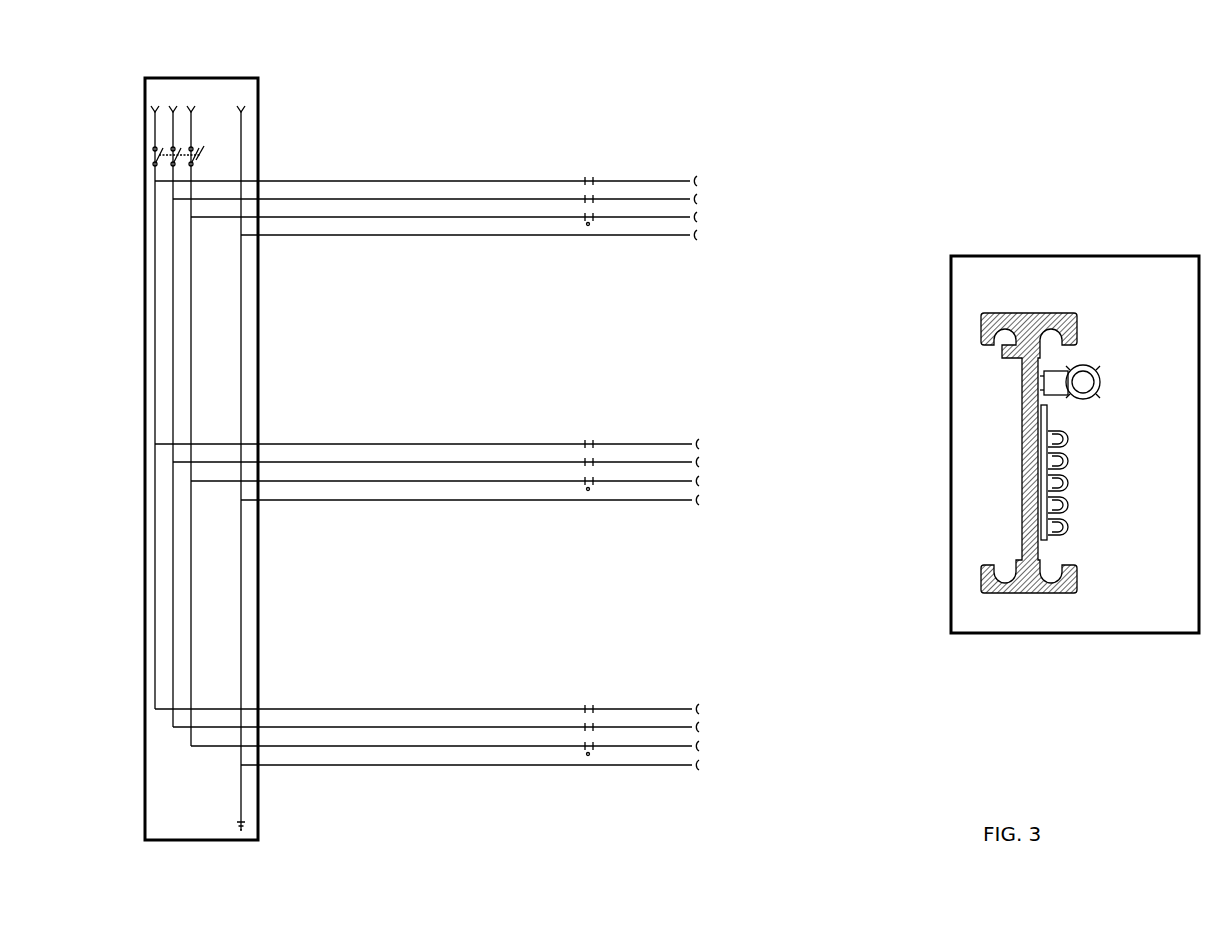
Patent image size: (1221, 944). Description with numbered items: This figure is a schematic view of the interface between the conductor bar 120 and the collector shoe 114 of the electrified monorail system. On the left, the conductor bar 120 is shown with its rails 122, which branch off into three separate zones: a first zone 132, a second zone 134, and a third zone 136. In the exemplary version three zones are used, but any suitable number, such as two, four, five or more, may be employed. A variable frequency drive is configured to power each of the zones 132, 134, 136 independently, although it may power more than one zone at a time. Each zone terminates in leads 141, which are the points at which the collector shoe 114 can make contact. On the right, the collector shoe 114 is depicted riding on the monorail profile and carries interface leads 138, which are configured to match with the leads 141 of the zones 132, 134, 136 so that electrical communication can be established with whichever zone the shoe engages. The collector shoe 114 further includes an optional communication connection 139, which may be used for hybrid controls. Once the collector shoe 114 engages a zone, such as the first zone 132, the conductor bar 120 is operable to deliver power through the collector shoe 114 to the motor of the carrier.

The collector shoe 114 is at (1080, 272).
The conductor bar 120 is at (260, 112).
The rails 122 is at (155, 333).
The first zone 132 is at (660, 156).
The second zone 134 is at (634, 419).
The third zone 136 is at (663, 665).
The interface leads 138 is at (1094, 504).
The optional communication connection 139 is at (1086, 370).
The leads 141 is at (709, 744).